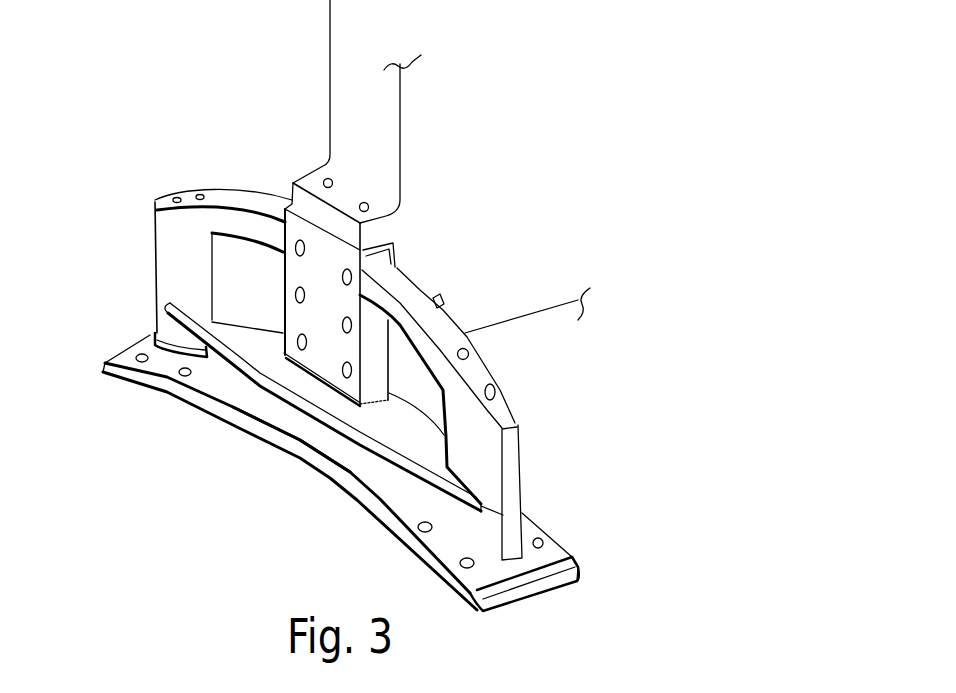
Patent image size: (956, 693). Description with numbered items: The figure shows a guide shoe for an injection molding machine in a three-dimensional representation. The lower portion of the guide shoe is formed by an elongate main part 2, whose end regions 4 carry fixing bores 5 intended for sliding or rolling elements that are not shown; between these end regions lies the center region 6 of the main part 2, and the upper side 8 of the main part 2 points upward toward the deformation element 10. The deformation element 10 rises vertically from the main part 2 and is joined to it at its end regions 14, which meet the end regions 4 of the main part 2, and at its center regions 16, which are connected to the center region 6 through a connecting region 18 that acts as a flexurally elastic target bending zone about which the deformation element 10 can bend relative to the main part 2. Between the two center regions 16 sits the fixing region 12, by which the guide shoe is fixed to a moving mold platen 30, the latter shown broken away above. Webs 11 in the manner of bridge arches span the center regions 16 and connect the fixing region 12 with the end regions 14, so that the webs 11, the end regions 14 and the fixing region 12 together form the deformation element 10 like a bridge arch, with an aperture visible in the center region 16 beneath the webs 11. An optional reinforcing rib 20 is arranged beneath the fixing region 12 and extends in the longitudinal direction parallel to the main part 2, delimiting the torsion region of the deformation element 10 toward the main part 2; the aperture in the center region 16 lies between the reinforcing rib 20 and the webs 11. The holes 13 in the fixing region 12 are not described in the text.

The main part 2 is at (283, 443).
The end regions of the main part 4 is at (153, 343).
The fixing bores 5 is at (133, 362).
The center region of the main part 6 is at (336, 457).
The upper side of main part 8 is at (558, 557).
The deformation element 10 is at (153, 222).
The webs 11 is at (423, 312).
The fixing region 12 is at (322, 267).
The bracket holes 13 is at (348, 325).
The end regions of the deformation element 14 is at (175, 267).
The center regions of the deformation element 16 is at (255, 280).
The connecting region 18 is at (155, 333).
The reinforcing rib 20 is at (257, 357).
The moving mold platen 30 is at (488, 276).